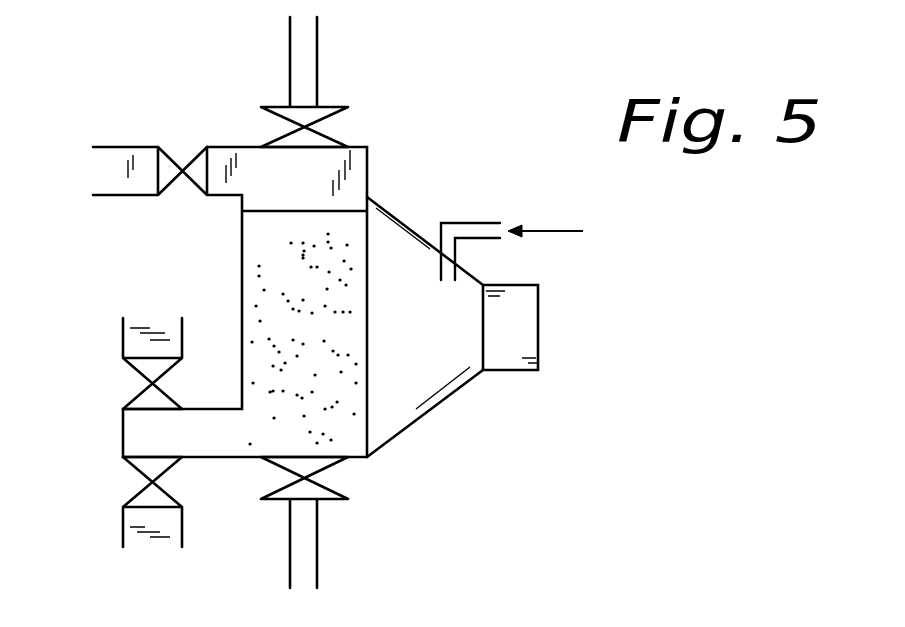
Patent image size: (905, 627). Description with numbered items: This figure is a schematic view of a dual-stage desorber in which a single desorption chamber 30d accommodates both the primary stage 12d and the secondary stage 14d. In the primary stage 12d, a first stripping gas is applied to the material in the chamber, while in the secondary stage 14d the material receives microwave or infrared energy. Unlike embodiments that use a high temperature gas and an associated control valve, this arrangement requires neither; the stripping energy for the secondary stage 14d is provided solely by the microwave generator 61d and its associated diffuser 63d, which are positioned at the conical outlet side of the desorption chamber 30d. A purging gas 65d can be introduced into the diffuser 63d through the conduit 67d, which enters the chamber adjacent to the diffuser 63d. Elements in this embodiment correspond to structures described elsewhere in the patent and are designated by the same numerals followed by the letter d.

The primary stage 12d is at (390, 128).
The secondary stage 14d is at (410, 158).
The desorption chamber 30d is at (263, 285).
The microwave generator 61d is at (525, 335).
The diffuser 63d is at (422, 387).
The purging gas 65d is at (583, 231).
The conduit 67d is at (485, 227).